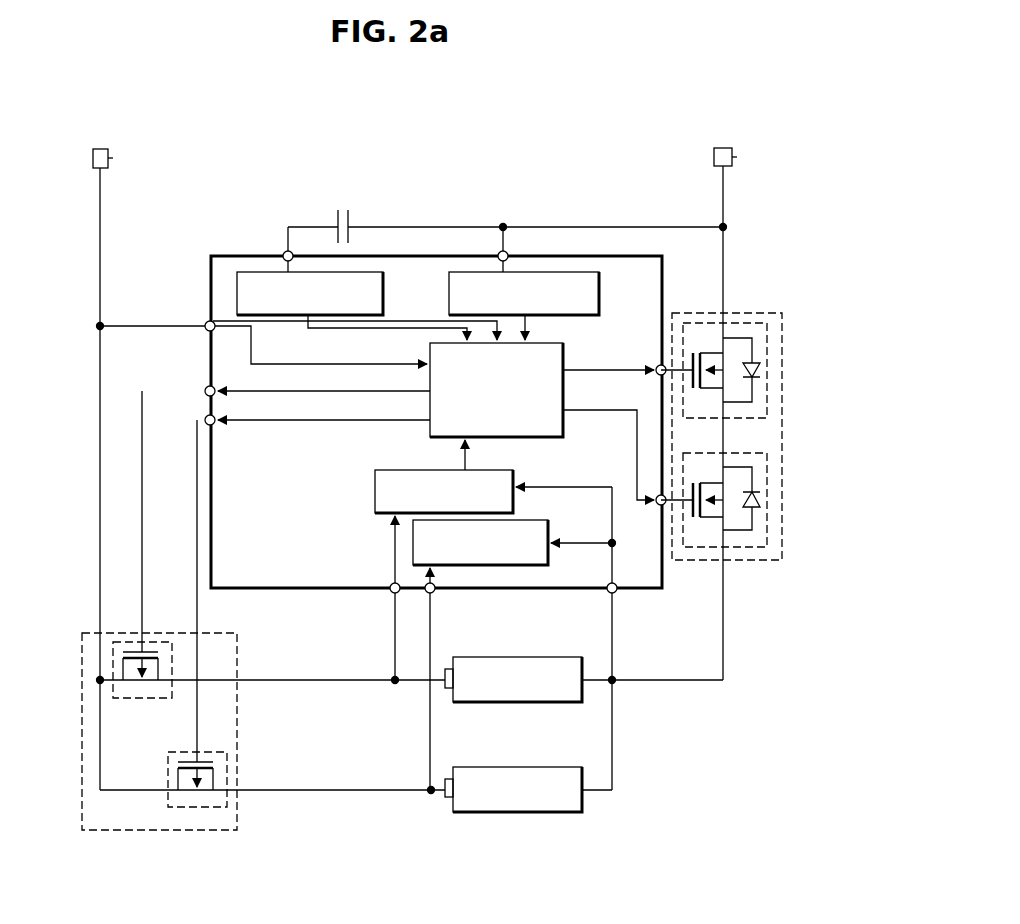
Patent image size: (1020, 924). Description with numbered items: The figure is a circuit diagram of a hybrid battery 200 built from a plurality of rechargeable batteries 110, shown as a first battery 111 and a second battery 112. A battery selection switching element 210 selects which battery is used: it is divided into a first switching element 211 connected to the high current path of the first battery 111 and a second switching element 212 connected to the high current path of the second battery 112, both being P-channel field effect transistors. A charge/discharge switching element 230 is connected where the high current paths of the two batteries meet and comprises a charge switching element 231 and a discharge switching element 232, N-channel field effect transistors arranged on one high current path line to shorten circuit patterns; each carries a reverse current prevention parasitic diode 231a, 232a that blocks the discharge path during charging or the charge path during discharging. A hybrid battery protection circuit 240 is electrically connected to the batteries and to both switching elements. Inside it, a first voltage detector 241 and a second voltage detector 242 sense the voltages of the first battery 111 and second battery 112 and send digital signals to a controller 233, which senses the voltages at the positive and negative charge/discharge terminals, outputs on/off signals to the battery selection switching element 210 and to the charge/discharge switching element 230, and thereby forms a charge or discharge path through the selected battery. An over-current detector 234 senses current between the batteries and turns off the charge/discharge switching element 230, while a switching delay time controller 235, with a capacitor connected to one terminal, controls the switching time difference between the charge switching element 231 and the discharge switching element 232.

The hybrid battery 200 is at (806, 97).
The hybrid battery protection circuit 240 is at (206, 285).
The switching delay time controller 235 is at (385, 293).
The over-current detector 234 is at (600, 292).
The controller 233 is at (560, 343).
The second voltage detector 242 is at (400, 470).
The first voltage detector 241 is at (470, 567).
The charge/discharge switching element 230 is at (782, 440).
The charge switching element 231 is at (767, 340).
The reverse current prevention parasitic diode 231a is at (760, 377).
The discharge switching element 232 is at (767, 480).
The reverse current prevention parasitic diode 232a is at (752, 505).
The battery selection switching element 210 is at (82, 790).
The second switching element 212 is at (133, 700).
The first switching element 211 is at (192, 808).
The plurality of rechargeable batteries 110 is at (657, 705).
The second battery 112 is at (582, 695).
The first battery 111 is at (582, 785).